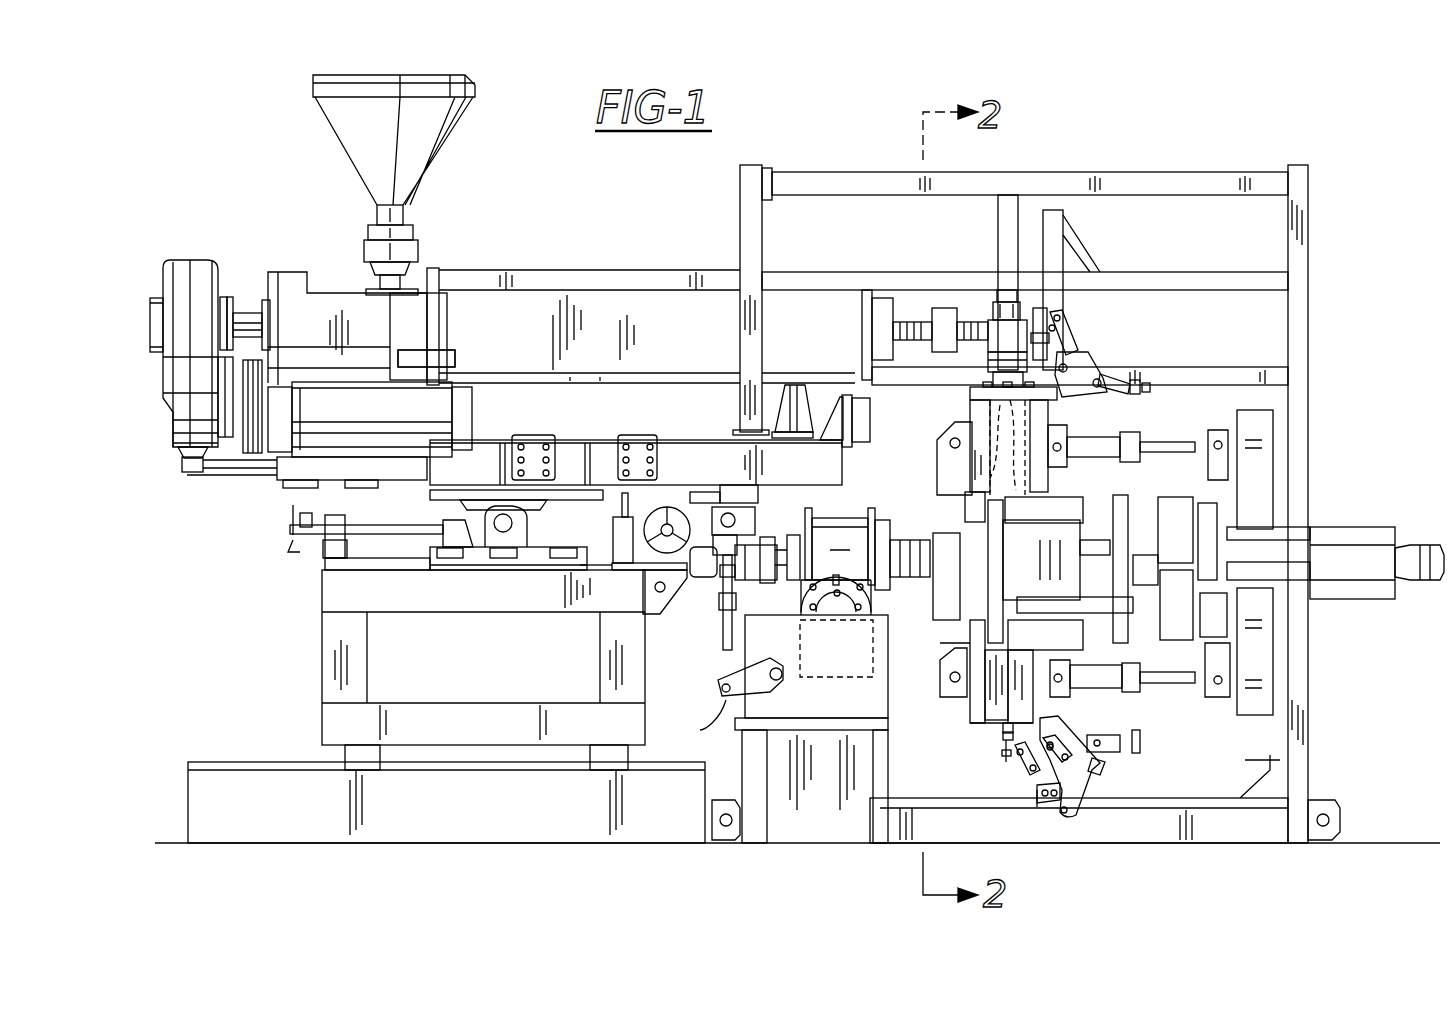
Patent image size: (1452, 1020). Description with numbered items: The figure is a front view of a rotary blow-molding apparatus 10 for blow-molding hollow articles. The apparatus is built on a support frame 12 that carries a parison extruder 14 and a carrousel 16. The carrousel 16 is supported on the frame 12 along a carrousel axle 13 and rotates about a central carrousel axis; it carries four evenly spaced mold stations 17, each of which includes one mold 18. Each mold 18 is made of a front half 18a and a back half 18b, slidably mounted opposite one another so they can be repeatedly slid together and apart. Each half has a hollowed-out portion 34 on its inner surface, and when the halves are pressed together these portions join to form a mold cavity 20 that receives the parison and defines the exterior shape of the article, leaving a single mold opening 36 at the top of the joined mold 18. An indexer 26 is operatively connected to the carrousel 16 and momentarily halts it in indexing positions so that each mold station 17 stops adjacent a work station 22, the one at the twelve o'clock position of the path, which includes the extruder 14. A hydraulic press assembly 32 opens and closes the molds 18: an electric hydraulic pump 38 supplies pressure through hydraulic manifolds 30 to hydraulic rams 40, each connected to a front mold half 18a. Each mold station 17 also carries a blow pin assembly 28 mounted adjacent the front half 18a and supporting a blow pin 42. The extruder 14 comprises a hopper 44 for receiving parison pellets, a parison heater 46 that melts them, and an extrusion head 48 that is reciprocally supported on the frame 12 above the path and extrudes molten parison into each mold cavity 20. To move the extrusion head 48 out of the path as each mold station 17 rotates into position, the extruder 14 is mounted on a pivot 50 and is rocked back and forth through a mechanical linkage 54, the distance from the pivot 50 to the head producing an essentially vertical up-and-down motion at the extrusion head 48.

The rotary blow-molding apparatus 10 is at (1358, 184).
The support frame 12 is at (1305, 235).
The carrousel axle 13 is at (945, 628).
The parison extruder 14 is at (825, 290).
The carrousel 16 is at (920, 640).
The mold station 17 is at (1040, 480).
The mold 18 is at (985, 458).
The front mold half 18a is at (1048, 374).
The back mold half 18b is at (990, 410).
The mold cavity 20 is at (936, 451).
The work station 22 is at (1020, 518).
The indexer 26 is at (845, 565).
The blow pin assembly 28 is at (1112, 348).
The hydraulic manifold 30 is at (1265, 430).
The hydraulic press assembly 32 is at (816, 705).
The hollowed-out portion 34 is at (1020, 478).
The mold opening 36 is at (1008, 383).
The electric hydraulic pump 38 is at (1368, 545).
The hydraulic ram 40 is at (1150, 432).
The blow pin 42 is at (1058, 335).
The hopper 44 is at (440, 123).
The parison heater 46 is at (656, 305).
The extrusion head 48 is at (1005, 300).
The pivot 50 is at (495, 522).
The mechanical linkage 54 is at (710, 698).